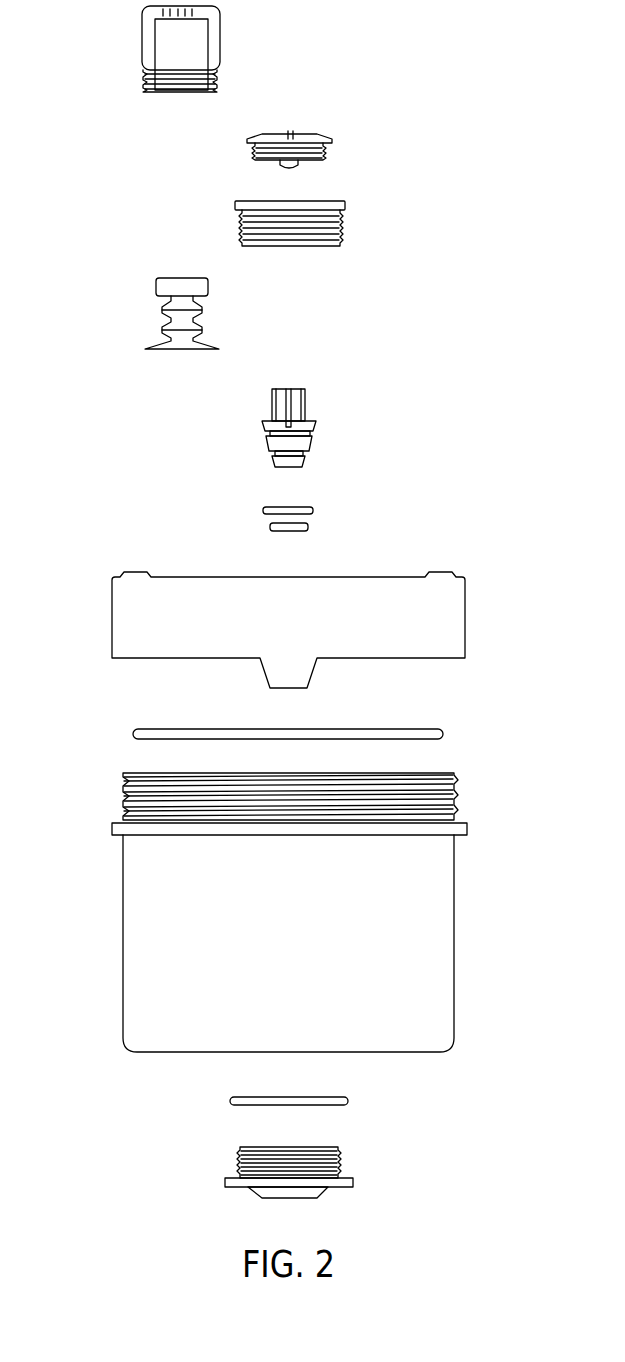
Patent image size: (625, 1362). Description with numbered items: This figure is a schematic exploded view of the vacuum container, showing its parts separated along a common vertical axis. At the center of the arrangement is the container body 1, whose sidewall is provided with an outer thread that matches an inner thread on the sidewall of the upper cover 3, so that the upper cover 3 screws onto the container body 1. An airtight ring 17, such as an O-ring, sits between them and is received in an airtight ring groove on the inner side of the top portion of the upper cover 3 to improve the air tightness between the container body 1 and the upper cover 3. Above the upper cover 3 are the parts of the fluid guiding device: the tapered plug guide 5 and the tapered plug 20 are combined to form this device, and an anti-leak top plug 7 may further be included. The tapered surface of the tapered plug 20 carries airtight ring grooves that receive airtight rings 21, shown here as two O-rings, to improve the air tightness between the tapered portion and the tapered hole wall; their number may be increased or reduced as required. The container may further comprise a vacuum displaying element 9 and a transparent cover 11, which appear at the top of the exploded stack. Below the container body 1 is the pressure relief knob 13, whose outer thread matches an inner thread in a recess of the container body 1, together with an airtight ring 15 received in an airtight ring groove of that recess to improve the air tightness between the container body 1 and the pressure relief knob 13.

The container body 1 is at (113, 901).
The upper cover 3 is at (112, 614).
The tapered plug guide 5 is at (232, 219).
The anti-leak top plug 7 is at (243, 145).
The vacuum displaying element 9 is at (143, 307).
The transparent cover 11 is at (145, 48).
The pressure relief knob 13 is at (227, 1161).
The airtight ring 15 is at (227, 1098).
The airtight ring 17 is at (130, 728).
The tapered plug 20 is at (252, 412).
The airtight rings 21 is at (252, 518).